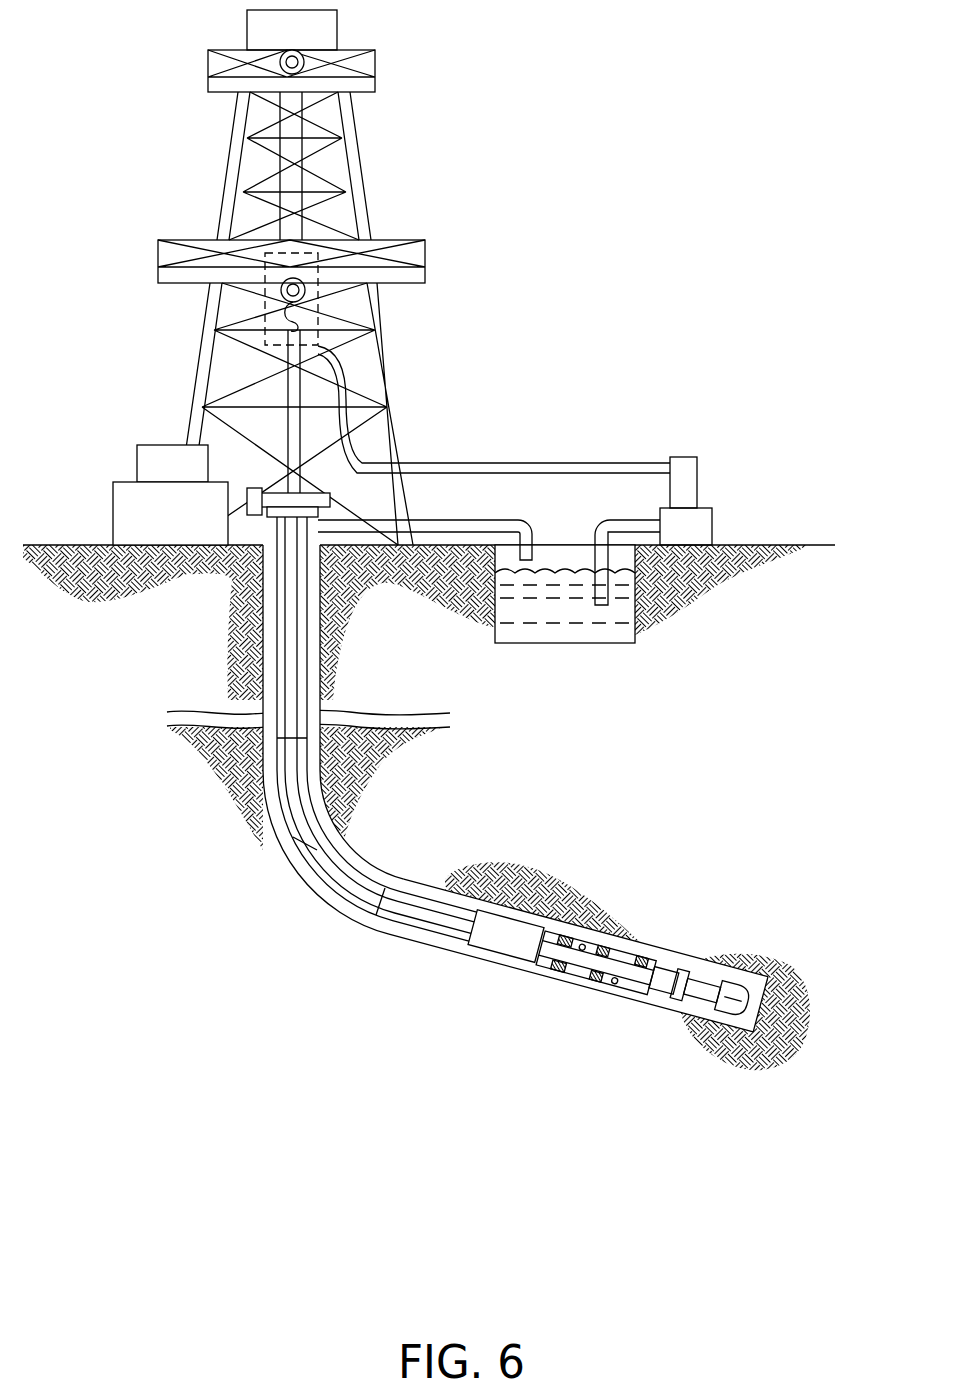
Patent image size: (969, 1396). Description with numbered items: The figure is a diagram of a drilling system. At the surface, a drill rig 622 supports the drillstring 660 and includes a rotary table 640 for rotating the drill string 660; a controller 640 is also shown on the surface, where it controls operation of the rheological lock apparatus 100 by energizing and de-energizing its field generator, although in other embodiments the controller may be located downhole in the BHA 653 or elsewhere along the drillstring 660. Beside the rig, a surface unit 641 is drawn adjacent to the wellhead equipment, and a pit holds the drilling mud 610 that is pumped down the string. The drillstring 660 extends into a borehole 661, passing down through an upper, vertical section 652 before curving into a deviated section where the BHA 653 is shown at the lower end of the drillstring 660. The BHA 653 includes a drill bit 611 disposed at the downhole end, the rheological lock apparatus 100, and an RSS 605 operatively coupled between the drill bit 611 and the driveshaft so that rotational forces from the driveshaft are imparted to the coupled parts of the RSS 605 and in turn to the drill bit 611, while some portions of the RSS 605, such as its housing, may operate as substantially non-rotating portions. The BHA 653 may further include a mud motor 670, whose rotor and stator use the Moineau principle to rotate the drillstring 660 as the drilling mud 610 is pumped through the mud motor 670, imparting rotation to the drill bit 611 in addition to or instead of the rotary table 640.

The drill rig 622 is at (232, 148).
The control unit 641 is at (158, 445).
The rotary table 640 is at (263, 508).
The borehole 661 is at (335, 562).
The drilling mud 610 is at (597, 632).
The vertical section of wellbore 652 is at (462, 724).
The drillstring 660 is at (520, 788).
The BHA 653 is at (778, 910).
The mud motor 670 is at (555, 950).
The RSS 605 is at (630, 967).
The rheological lock apparatus 100 is at (587, 983).
The drill bit 611 is at (752, 1008).